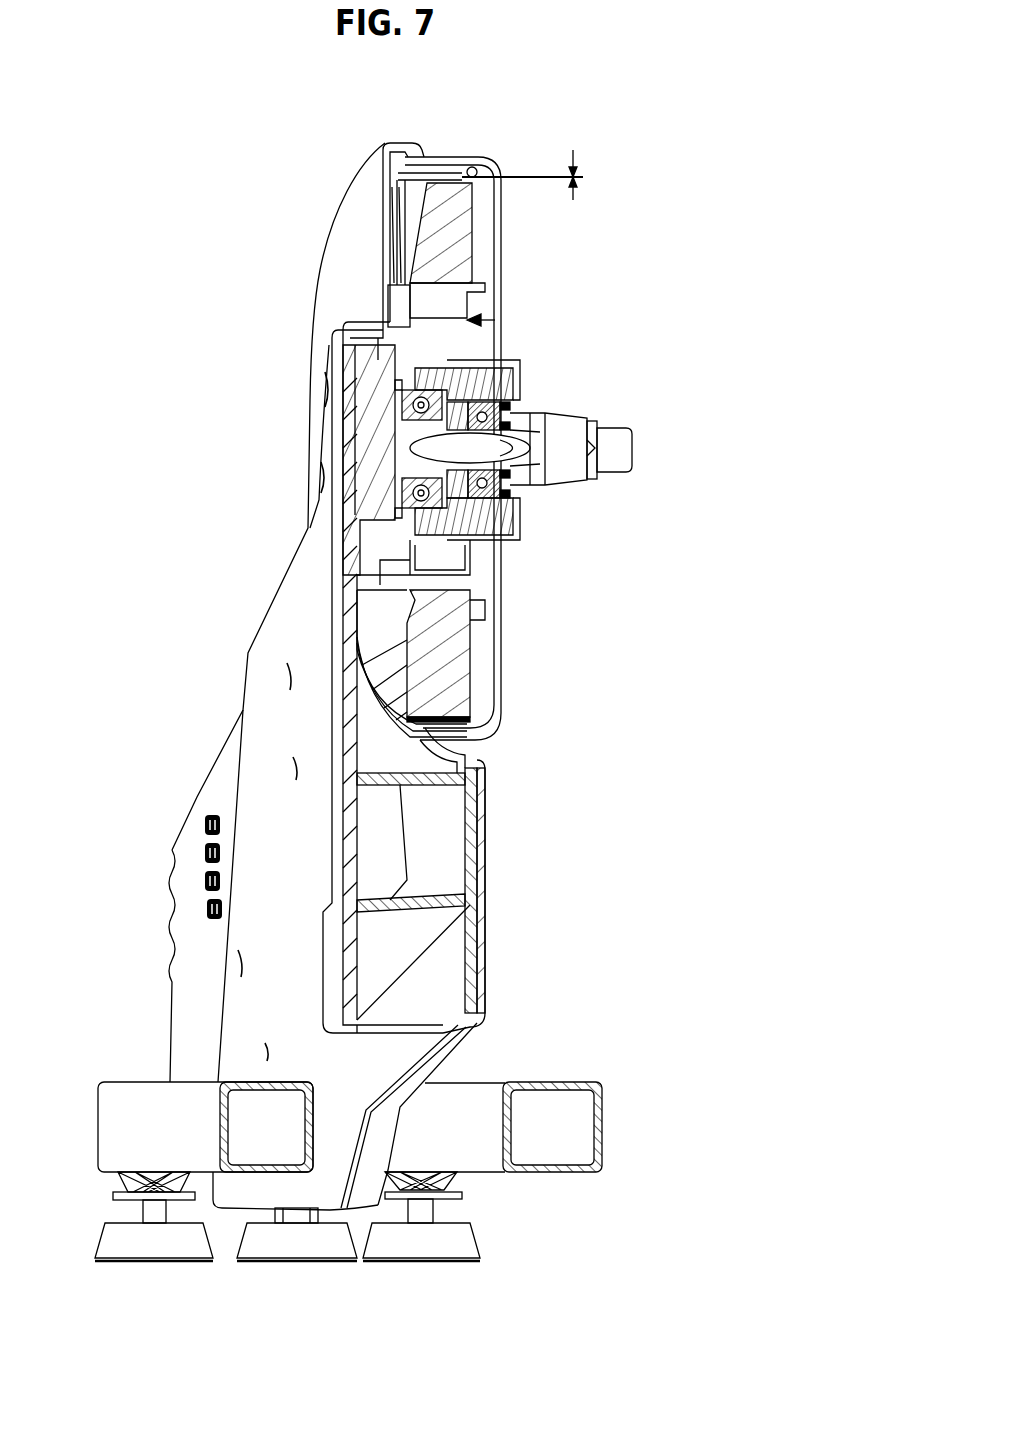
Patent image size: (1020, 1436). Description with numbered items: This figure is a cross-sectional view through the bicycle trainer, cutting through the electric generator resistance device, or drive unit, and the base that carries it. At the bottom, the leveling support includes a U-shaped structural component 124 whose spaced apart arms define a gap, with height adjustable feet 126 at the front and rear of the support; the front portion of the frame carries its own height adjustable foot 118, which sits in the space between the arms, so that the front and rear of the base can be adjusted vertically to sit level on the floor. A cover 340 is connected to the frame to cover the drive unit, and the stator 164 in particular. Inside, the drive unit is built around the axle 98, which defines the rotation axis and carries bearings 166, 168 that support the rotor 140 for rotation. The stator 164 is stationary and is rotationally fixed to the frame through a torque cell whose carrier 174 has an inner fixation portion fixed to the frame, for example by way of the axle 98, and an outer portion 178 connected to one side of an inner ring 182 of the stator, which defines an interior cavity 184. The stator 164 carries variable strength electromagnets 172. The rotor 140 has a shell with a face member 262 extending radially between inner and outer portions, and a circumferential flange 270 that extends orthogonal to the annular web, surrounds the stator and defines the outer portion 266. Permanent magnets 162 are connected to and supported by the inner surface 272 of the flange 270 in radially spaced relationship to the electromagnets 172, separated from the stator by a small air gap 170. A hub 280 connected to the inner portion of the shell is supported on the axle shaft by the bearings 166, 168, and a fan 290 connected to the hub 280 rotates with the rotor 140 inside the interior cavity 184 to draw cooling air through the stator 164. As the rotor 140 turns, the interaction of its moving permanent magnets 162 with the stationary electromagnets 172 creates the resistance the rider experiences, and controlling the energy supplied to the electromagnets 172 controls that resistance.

The axle 98 is at (597, 418).
The foot 118 is at (303, 1253).
The U-shaped structural component 124 is at (483, 1090).
The height adjustable feet 126 is at (475, 1244).
The rotor 140 is at (503, 632).
The permanent magnets 162 is at (455, 173).
The stator 164 is at (463, 660).
The bearing 166 is at (437, 390).
The bearing 168 is at (500, 405).
The air gap 170 is at (585, 176).
The electromagnets 172 is at (437, 233).
The carrier 174 is at (393, 300).
The outer portion 178 is at (393, 310).
The inner ring 182 is at (467, 300).
The interior cavity 184 is at (496, 320).
The face member 262 is at (503, 595).
The outer portion 266 is at (450, 747).
The circumferential flange 270 is at (447, 156).
The inner surface 272 is at (476, 168).
The hub 280 is at (503, 513).
The fan 290 is at (443, 558).
The cover 340 is at (337, 300).